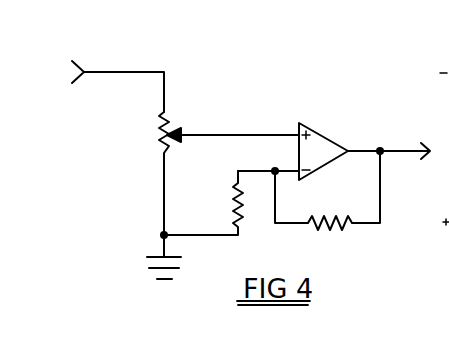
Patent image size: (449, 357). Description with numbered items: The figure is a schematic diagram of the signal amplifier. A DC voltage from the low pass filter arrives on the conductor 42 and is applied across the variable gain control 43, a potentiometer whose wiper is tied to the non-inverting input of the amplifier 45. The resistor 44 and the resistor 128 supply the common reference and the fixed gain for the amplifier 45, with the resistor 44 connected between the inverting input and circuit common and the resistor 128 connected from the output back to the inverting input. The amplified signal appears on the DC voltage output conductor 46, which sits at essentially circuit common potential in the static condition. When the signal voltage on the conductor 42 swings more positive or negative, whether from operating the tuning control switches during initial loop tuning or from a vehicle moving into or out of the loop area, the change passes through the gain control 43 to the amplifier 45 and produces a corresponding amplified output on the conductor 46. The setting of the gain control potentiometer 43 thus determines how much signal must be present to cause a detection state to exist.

The conductor 42 is at (118, 80).
The variable gain control 43 is at (212, 173).
The resistor 44 is at (231, 203).
The amplifier 45 is at (323, 143).
The DC voltage output conductor 46 is at (389, 142).
The resistor 128 is at (325, 204).